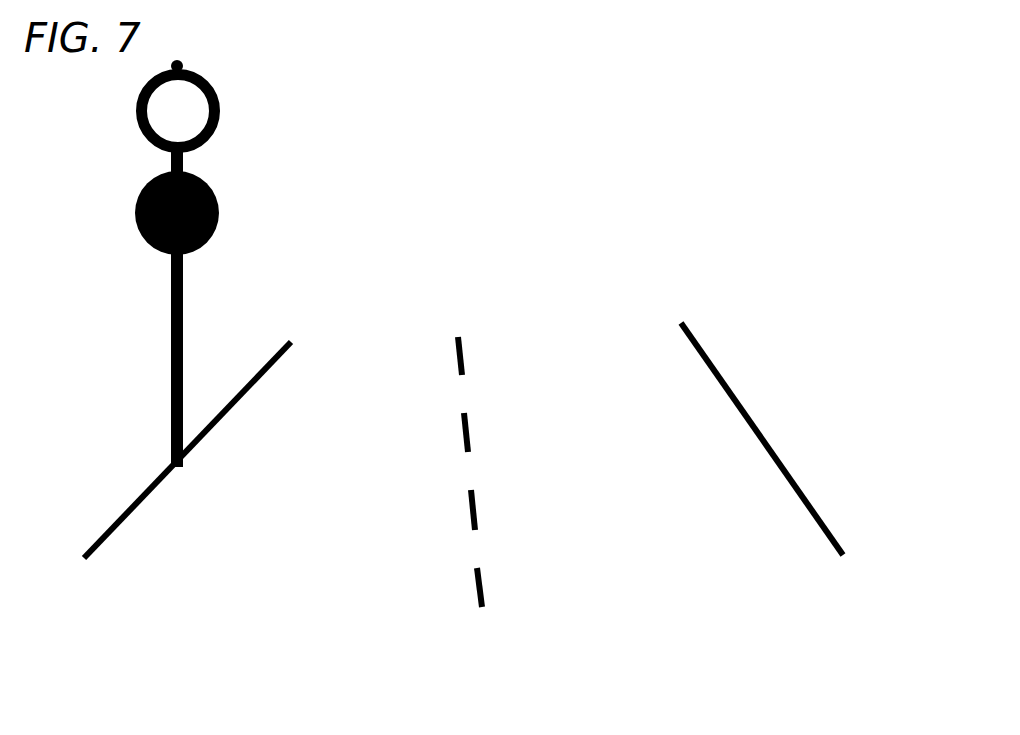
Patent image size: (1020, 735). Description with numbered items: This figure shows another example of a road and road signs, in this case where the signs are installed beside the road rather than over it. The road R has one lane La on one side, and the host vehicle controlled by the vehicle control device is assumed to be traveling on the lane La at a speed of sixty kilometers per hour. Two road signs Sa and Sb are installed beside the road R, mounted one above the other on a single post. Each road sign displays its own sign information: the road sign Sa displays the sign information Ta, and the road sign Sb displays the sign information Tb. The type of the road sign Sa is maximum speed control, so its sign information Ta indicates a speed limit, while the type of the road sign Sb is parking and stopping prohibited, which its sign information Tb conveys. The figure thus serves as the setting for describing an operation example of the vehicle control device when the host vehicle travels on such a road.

The road sign Sa is at (206, 83).
The sign information Ta is at (199, 108).
The road sign Sb is at (204, 183).
The sign information Tb is at (205, 212).
The road R is at (142, 495).
The lane La is at (292, 560).